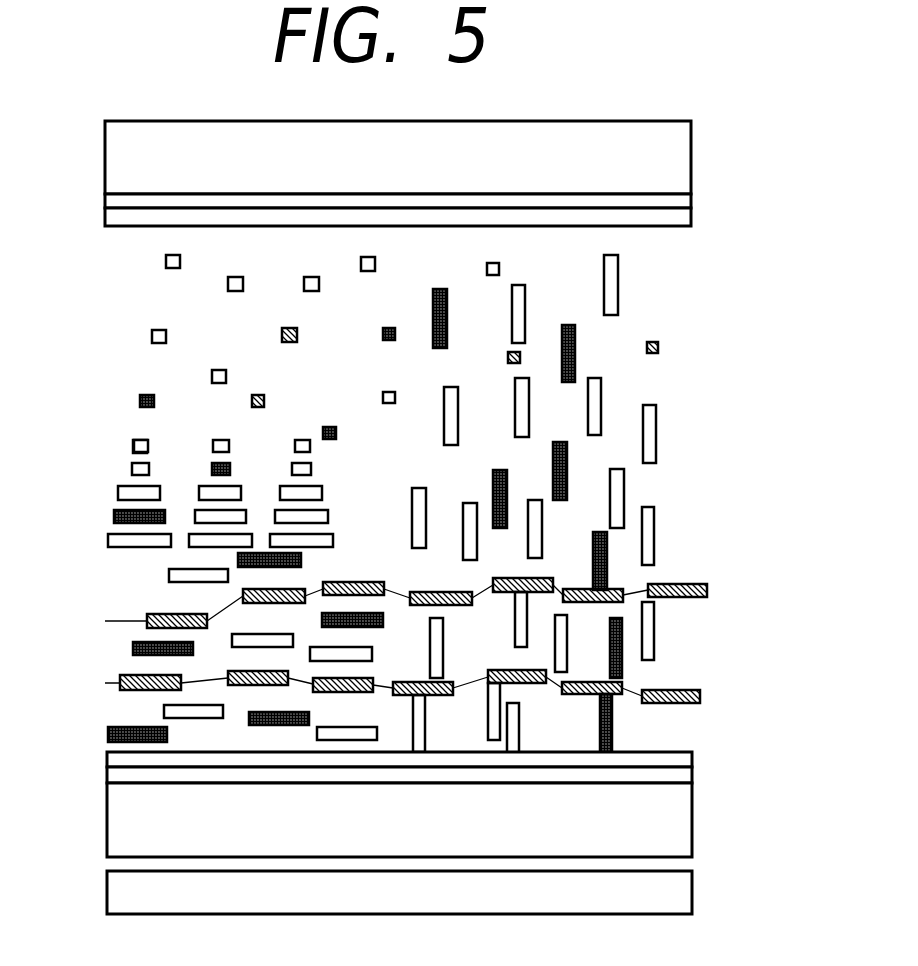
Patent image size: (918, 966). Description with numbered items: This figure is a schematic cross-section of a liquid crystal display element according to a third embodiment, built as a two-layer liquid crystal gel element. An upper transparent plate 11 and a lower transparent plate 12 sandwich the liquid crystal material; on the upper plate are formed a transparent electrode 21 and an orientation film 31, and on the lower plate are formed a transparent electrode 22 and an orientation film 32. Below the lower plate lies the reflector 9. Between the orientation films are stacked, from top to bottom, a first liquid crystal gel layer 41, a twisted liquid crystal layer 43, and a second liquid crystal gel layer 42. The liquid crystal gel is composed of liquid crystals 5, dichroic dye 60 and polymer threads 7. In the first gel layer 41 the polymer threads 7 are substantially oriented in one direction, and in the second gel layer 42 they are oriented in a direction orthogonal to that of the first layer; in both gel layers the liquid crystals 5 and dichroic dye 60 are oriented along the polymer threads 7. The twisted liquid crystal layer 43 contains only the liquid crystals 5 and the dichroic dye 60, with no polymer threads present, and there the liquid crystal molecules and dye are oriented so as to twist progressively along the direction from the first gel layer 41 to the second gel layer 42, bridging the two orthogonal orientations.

The transparent plate 11 is at (682, 148).
The transparent electrode 21 is at (684, 200).
The orientation film 31 is at (684, 218).
The liquid crystal gel layer 41 is at (90, 447).
The twisted liquid crystal layer 43 is at (90, 448).
The liquid crystal gel layer 42 is at (90, 752).
The dichroic dye 60 is at (607, 557).
The polymer threads 7 is at (707, 589).
The liquid crystals 5 is at (654, 646).
The orientation film 32 is at (692, 757).
The transparent electrode 22 is at (684, 775).
The transparent plate 12 is at (687, 835).
The reflector 9 is at (692, 893).